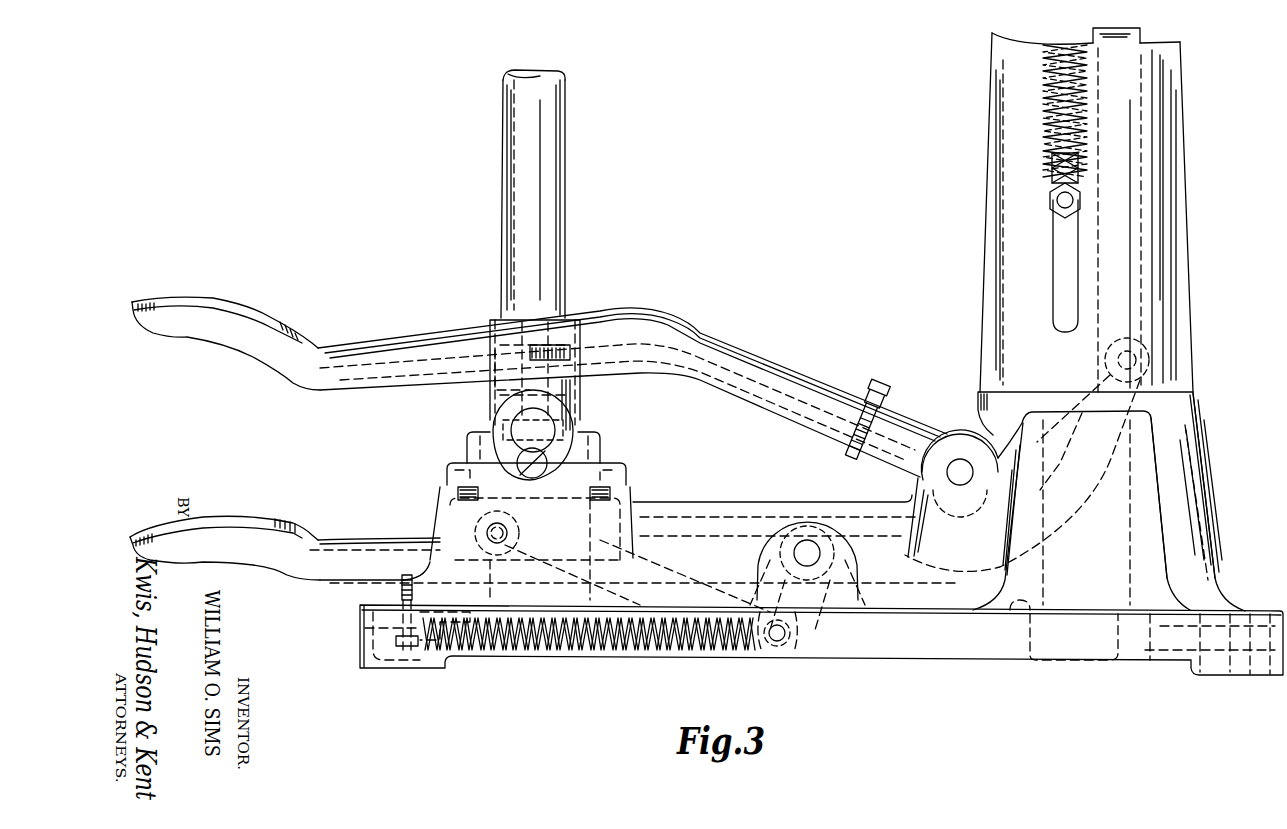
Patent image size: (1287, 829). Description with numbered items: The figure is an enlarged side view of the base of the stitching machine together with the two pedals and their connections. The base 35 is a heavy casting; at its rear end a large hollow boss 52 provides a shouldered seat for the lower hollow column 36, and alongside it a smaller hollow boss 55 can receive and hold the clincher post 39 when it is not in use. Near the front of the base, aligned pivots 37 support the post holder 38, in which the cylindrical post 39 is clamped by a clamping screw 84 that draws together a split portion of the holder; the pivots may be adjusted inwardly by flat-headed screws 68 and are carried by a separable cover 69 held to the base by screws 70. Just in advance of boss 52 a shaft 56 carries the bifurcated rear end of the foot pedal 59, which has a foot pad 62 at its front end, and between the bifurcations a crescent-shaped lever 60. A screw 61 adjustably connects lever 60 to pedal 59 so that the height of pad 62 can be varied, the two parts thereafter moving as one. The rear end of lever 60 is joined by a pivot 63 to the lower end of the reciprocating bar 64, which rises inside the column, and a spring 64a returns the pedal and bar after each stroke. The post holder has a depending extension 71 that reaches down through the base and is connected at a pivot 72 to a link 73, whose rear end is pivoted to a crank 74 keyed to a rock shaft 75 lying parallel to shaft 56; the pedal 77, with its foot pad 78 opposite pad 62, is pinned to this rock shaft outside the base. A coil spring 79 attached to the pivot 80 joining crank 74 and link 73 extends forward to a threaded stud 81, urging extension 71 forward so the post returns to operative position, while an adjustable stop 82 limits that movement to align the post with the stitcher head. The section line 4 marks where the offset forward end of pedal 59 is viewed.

The section line 4- 4 is at (1262, 300).
The base 35 is at (918, 660).
The hollow column 36 is at (1186, 181).
The pivots 37 is at (545, 425).
The post holder 38 is at (573, 388).
The clincher post 39 is at (567, 162).
The hollow boss 52 is at (1196, 462).
The second boss 55 is at (1148, 524).
The shaft 56 is at (960, 485).
The foot pedal 59 is at (728, 338).
The lever 60 is at (1080, 530).
The screw 61 is at (880, 393).
The foot pad 62 is at (210, 305).
The pivot 63 is at (1118, 359).
The reciprocating link or bar 64 is at (1095, 43).
The spring 64a is at (1048, 134).
The screws 68 is at (540, 475).
The separable plate or cover 69 is at (602, 452).
The screws 70 is at (640, 473).
The depending extension 71 is at (562, 590).
The pivot 72 is at (508, 545).
The link 73 is at (676, 556).
The crank 74 is at (808, 598).
The rock shaft 75 is at (820, 553).
The pedal 77 is at (372, 540).
The foot pad 78 is at (248, 517).
The coil spring 79 is at (628, 658).
The pivot 80 is at (790, 636).
The threaded stud 81 is at (404, 648).
The stop 82 is at (446, 575).
The clamping screw 84 is at (490, 372).